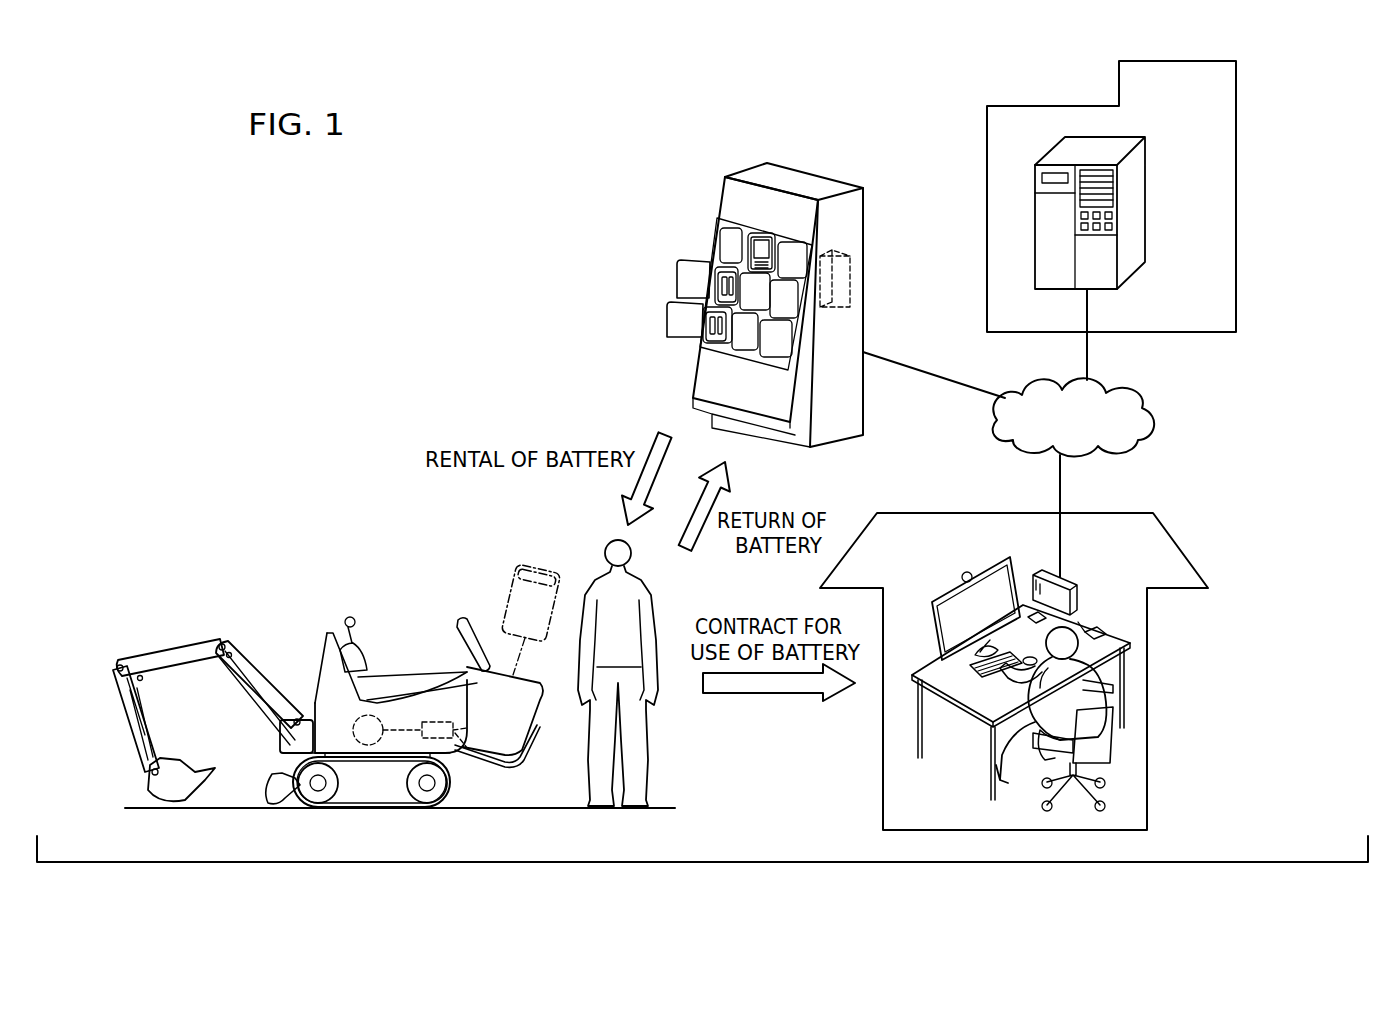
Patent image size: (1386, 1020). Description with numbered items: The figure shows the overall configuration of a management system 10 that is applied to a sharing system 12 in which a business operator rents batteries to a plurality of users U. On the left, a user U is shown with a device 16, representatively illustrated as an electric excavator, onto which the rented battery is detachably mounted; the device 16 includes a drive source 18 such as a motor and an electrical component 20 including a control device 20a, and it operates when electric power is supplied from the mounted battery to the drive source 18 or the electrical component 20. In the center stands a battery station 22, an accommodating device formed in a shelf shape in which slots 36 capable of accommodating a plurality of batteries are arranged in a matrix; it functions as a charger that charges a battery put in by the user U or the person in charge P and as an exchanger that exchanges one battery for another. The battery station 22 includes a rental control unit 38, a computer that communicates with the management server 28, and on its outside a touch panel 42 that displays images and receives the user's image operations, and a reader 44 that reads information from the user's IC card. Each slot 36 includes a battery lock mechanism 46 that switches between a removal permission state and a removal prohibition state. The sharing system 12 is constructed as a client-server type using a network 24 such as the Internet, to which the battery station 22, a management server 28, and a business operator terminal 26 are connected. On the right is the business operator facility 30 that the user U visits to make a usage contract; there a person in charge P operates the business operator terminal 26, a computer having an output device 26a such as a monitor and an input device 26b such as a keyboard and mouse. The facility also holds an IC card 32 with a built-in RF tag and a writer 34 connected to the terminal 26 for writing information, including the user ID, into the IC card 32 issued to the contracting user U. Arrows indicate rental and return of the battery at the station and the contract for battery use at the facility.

The management system 10 is at (388, 244).
The sharing system 12 is at (639, 227).
The device 16 is at (306, 628).
The drive source 18 is at (357, 721).
The electrical component 20 is at (437, 722).
The control device 20a is at (458, 747).
The battery station 22 is at (828, 182).
The network 24 is at (1150, 400).
The business operator terminal 26 is at (1065, 590).
The output device 26a is at (955, 603).
The input device 26b is at (975, 676).
The management server 28 is at (1035, 225).
The business operator facility 30 is at (1175, 538).
The IC card 32 is at (1030, 614).
The writer 34 is at (1095, 630).
The slot 36 is at (778, 347).
The rental control unit 38 is at (855, 290).
The touch panel 42 is at (760, 248).
The reader 44 is at (758, 250).
The battery lock mechanism 46 is at (680, 313).
The user U is at (653, 600).
The person in charge P is at (1090, 676).